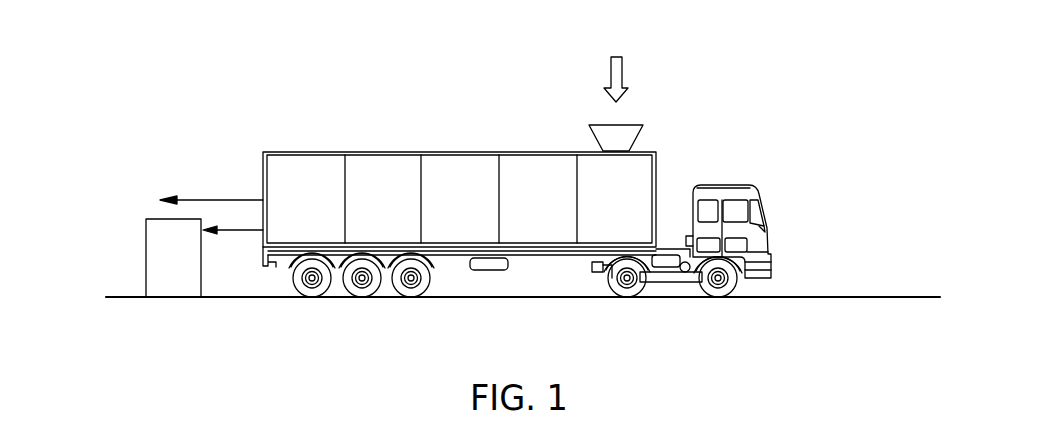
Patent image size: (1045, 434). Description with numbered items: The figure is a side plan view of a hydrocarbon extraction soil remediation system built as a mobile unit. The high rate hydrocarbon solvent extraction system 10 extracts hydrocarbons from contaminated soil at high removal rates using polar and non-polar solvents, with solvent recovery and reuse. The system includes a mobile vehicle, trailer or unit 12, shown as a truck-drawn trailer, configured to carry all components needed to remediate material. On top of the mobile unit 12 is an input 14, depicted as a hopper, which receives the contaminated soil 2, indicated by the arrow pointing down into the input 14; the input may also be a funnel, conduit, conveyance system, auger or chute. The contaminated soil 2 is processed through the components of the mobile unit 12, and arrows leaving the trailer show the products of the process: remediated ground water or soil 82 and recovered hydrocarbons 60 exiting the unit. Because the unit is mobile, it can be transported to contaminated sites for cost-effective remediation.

The high rate hydrocarbon solvent extraction system 10 is at (232, 66).
The mobile unit 12 is at (390, 152).
The input 14 is at (595, 137).
The contaminated soil 2 is at (616, 53).
The recovered hydrocarbons 60 is at (146, 258).
The remediated soil 82 is at (212, 198).